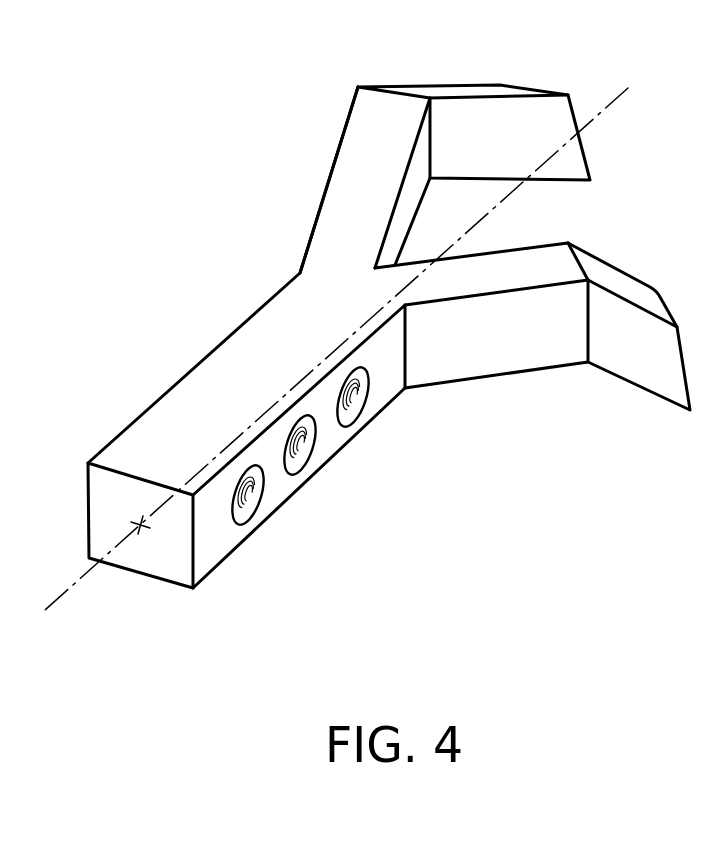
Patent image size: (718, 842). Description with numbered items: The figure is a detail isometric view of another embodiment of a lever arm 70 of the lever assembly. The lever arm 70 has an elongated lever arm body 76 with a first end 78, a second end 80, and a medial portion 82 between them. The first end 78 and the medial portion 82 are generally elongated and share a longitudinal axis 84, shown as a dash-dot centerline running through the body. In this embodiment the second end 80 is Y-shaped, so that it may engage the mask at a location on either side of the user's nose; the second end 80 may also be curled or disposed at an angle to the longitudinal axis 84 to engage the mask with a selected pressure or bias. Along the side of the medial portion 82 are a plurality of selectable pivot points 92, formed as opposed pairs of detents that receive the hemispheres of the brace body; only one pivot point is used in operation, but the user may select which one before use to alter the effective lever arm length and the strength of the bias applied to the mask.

The lever arm 70 is at (373, 337).
The lever arm body 76 is at (263, 303).
The first end 78 is at (107, 460).
The second end 80 is at (441, 65).
The medial portion 82 is at (213, 392).
The longitudinal axis 84 is at (605, 110).
The selectable pivot points 92 is at (260, 498).